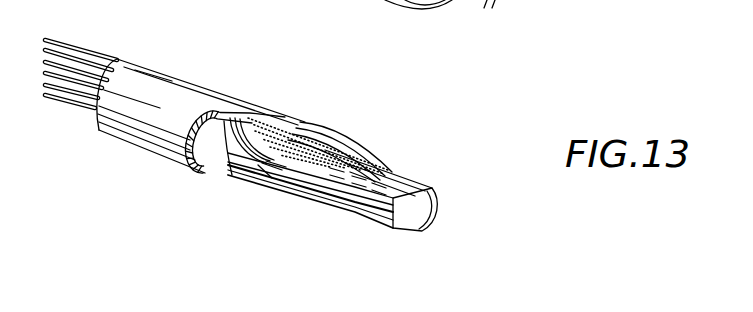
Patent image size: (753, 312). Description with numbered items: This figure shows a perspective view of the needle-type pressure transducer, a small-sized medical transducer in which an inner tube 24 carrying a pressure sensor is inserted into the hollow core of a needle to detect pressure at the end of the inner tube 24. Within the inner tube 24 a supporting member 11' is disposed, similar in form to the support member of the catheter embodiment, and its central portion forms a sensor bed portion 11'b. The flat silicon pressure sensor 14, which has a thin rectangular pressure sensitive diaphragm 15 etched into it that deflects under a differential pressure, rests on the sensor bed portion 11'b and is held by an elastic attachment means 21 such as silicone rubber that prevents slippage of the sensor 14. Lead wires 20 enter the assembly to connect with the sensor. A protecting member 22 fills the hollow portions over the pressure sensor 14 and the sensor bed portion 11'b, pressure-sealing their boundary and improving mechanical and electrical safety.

The lead wires 20 is at (84, 47).
The inner tube 24 is at (201, 92).
The protecting member 22 is at (289, 133).
The elastic attachment means 21 is at (246, 172).
The pressure sensitive diaphragm 15 is at (388, 172).
The silicon pressure sensor 14 is at (311, 180).
The sensor bed portion 11'b is at (358, 227).
The supporting member 11' is at (441, 217).